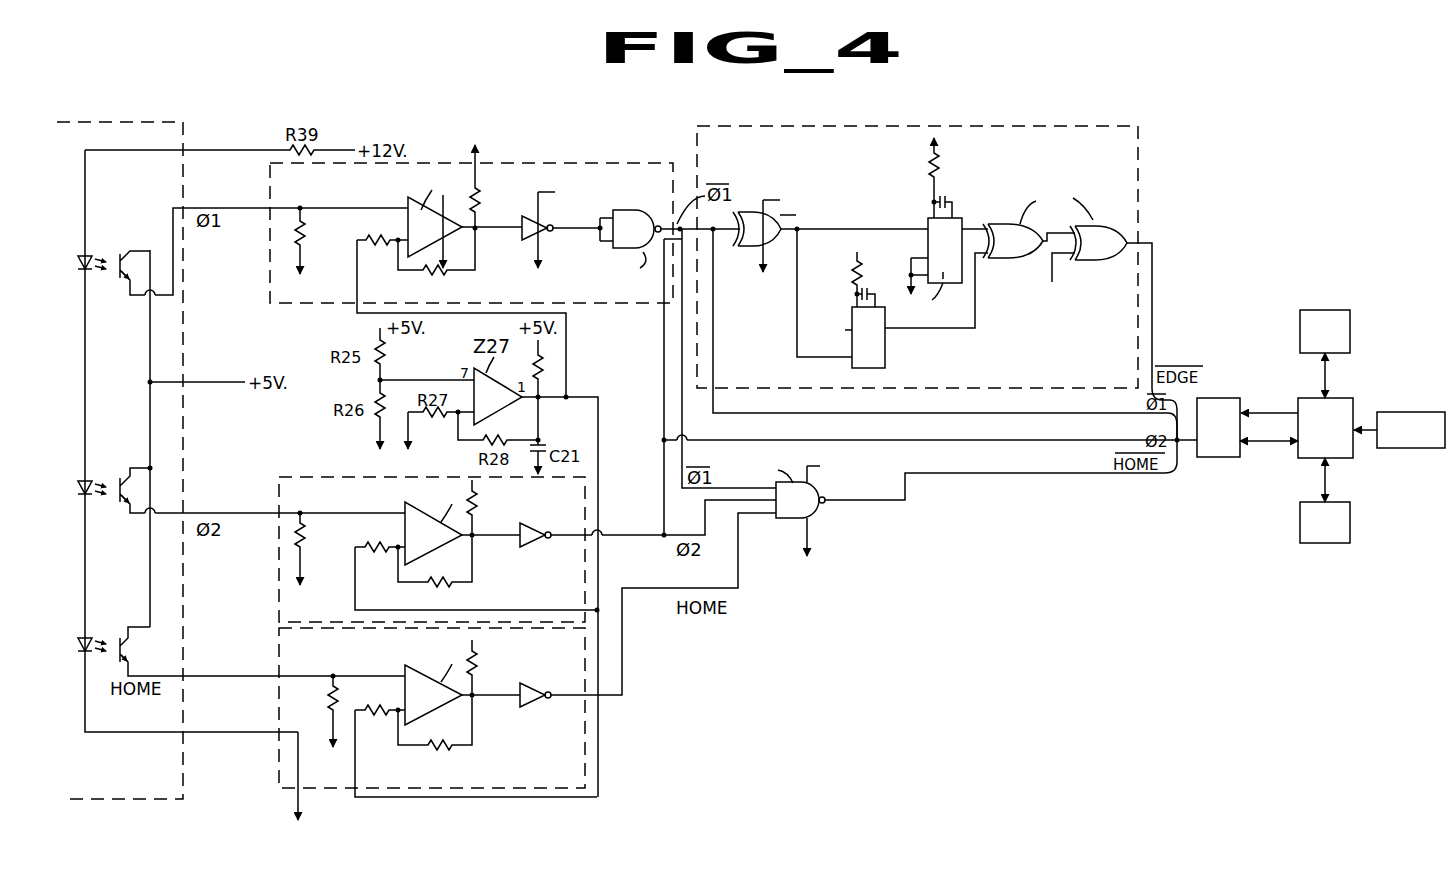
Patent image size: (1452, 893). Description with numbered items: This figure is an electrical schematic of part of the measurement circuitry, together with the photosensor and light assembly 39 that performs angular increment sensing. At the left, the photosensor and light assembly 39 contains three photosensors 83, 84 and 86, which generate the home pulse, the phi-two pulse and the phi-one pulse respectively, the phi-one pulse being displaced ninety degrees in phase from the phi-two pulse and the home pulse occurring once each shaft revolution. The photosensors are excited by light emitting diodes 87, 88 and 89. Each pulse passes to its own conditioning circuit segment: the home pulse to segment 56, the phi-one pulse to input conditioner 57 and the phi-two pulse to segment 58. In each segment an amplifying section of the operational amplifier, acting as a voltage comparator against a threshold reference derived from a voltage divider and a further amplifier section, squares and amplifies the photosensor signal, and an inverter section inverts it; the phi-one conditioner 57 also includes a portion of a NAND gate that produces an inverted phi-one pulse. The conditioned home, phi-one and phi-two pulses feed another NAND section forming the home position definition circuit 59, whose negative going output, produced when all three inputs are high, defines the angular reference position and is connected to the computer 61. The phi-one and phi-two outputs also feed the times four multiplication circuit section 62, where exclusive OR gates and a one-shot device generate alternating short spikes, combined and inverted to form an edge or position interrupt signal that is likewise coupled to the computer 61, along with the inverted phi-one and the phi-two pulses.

The photosensor and light assembly 39 is at (103, 800).
The conditioning circuit segment for the home pulse 56 is at (312, 790).
The input conditioning circuit for the φ1 pulse 57 is at (556, 164).
The conditioning circuit segment for the φ2 pulse 58 is at (363, 478).
The home position definition circuit 59 is at (791, 526).
The computer 61 is at (1375, 346).
The times four multiplication circuit section 62 is at (1140, 138).
The photosensor 83 is at (118, 645).
The photosensor 84 is at (122, 485).
The photosensor 86 is at (120, 262).
The light emitting diode 87 is at (82, 652).
The light emitting diode 88 is at (83, 493).
The light emitting diode 89 is at (83, 271).